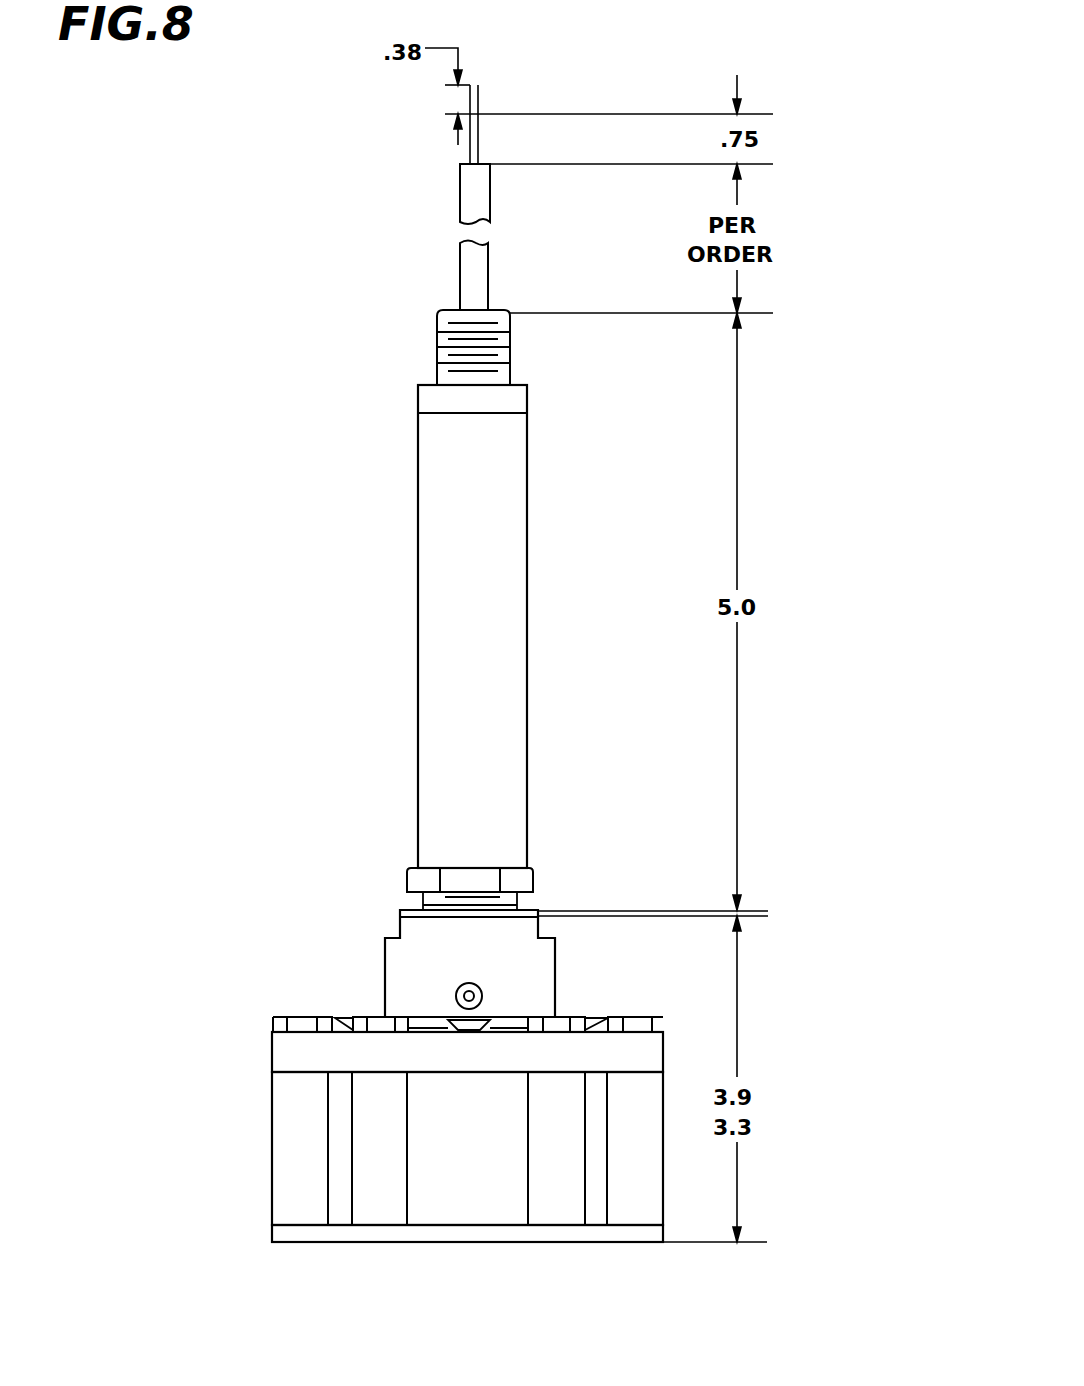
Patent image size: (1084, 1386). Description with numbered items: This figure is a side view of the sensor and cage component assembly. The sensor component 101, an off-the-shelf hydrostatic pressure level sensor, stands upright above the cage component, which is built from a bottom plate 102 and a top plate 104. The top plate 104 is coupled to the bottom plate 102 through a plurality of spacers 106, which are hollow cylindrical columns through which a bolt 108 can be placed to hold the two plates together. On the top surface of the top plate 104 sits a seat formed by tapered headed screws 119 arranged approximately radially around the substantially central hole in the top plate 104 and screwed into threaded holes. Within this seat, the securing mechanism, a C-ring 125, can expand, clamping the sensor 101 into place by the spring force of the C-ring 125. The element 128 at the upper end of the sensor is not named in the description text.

The sensor component 101 is at (413, 517).
The bottom plate 102 is at (640, 1242).
The top plate 104 is at (665, 1052).
The spacers 106 is at (637, 1187).
The bolt 108 is at (635, 1015).
The tapered headed screws 119 is at (483, 1020).
The C-ring 125 is at (430, 1025).
The connector cable 128 is at (458, 190).